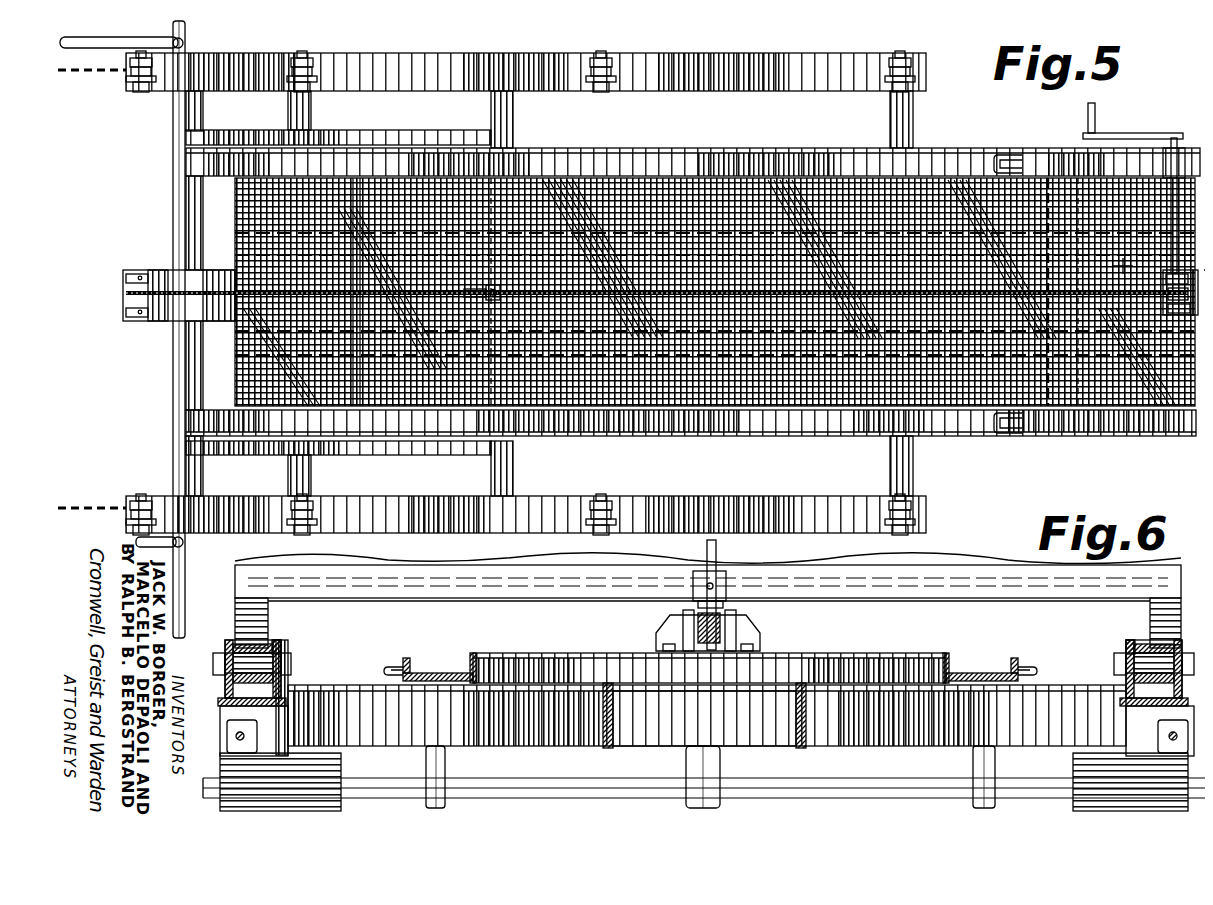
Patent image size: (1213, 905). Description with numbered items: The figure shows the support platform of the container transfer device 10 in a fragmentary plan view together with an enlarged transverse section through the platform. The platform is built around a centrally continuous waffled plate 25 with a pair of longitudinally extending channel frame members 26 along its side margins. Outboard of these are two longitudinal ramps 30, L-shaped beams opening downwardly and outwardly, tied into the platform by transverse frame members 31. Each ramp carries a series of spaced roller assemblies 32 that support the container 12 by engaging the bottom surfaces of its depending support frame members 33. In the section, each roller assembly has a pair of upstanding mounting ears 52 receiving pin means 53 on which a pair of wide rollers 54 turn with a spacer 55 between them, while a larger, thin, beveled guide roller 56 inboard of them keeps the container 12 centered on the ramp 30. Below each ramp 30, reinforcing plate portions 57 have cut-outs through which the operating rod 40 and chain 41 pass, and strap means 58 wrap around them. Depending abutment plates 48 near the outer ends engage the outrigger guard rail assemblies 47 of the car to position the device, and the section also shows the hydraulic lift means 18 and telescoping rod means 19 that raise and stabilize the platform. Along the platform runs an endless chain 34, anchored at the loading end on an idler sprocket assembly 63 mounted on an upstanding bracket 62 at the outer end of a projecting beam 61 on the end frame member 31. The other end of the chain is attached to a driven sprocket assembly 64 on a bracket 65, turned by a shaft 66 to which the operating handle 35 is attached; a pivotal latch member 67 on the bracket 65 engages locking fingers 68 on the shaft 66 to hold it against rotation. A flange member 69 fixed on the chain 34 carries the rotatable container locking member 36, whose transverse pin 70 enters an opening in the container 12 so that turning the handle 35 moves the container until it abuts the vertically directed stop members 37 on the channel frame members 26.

In FIG. 5, the container transfer device 10 is at (982, 161).
In FIG. 6, the container 12 is at (708, 556).
In FIG. 6, the hydraulic lift means 18 is at (724, 777).
In FIG. 6, the telescoping rod means 19 is at (710, 777).
In FIG. 5, the waffled plate 25 is at (715, 263).
In FIG. 6, the waffled plate 25 is at (709, 651).
In FIG. 5, the channel frame members 26 is at (693, 292).
In FIG. 6, the channel frame members 26 is at (710, 657).
In FIG. 5, the ramps 30 is at (526, 278).
In FIG. 6, the ramps 30 is at (701, 697).
In FIG. 5, the transverse frame members 31 is at (543, 293).
In FIG. 6, the transverse frame members 31 is at (669, 718).
In FIG. 5, the roller assemblies 32 is at (540, 280).
In FIG. 6, the roller assemblies 32 is at (703, 651).
In FIG. 6, the depending support frame members 33 is at (704, 606).
In FIG. 5, the endless chain 34 is at (657, 279).
In FIG. 5, the operating handle 35 is at (1133, 119).
In FIG. 5, the container locking member 36 is at (516, 305).
In FIG. 6, the container locking member 36 is at (684, 595).
In FIG. 5, the stop members 37 is at (1005, 290).
In FIG. 6, the operating rod 40 is at (696, 731).
In FIG. 5, the chain 41 is at (120, 292).
In FIG. 5, the outrigger guard rail assemblies 47 is at (155, 329).
In FIG. 6, the outrigger guard rail assemblies 47 is at (704, 775).
In FIG. 6, the abutment plates 48 is at (704, 782).
In FIG. 6, the mounting ears 52 is at (697, 663).
In FIG. 6, the pin means 53 is at (703, 646).
In FIG. 6, the rollers 54 is at (702, 626).
In FIG. 6, the spacer 55 is at (719, 702).
In FIG. 6, the guide roller 56 is at (706, 629).
In FIG. 6, the reinforcing plate portions 57 is at (703, 739).
In FIG. 6, the strap means 58 is at (689, 752).
In FIG. 5, the outwardly projecting beam 61 is at (179, 278).
In FIG. 5, the upstanding bracket 62 is at (120, 262).
In FIG. 6, the upstanding bracket 62 is at (740, 630).
In FIG. 5, the sprocket assembly 63 is at (122, 326).
In FIG. 6, the sprocket assembly 63 is at (678, 620).
In FIG. 5, the driven sprocket assembly 64 is at (1160, 314).
In FIG. 5, the bracket 65 is at (1199, 303).
In FIG. 5, the shaft 66 is at (1184, 198).
In FIG. 5, the latch member 67 is at (1186, 301).
In FIG. 5, the locking fingers 68 is at (1164, 269).
In FIG. 5, the flange member 69 is at (479, 280).
In FIG. 6, the flange member 69 is at (729, 585).
In FIG. 5, the transverse pin 70 is at (453, 303).